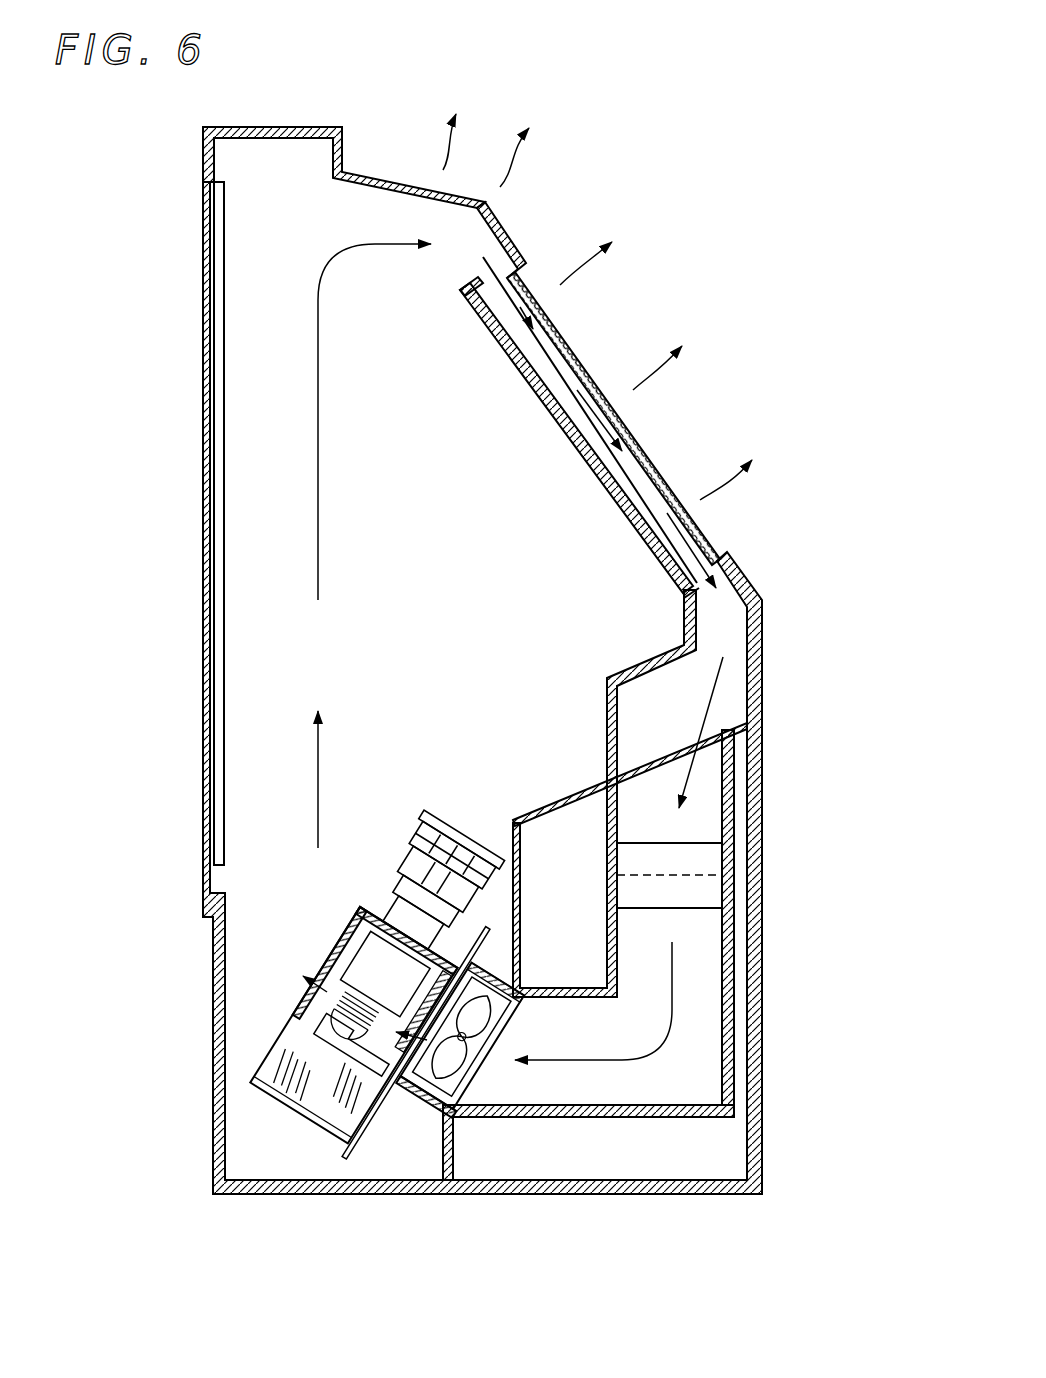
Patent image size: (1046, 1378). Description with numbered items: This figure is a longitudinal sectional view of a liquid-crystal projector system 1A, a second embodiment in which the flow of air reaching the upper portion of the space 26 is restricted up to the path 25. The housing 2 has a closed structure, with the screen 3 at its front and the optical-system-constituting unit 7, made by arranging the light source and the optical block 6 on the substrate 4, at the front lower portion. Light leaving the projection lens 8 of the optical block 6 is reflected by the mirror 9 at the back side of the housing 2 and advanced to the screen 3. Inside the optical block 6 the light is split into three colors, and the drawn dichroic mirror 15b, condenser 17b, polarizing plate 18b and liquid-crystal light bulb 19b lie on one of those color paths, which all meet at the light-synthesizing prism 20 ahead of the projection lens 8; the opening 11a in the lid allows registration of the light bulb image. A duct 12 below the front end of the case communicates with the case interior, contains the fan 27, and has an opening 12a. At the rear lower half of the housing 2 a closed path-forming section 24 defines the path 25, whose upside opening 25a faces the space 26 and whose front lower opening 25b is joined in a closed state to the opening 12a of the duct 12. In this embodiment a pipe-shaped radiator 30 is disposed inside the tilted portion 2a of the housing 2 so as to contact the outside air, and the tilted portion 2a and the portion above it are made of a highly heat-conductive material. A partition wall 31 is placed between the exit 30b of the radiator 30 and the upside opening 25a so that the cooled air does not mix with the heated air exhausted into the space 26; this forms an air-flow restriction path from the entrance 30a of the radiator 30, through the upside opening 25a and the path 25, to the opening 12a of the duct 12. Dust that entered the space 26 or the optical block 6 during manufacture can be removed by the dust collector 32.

The liquid-crystal projector system 1A is at (612, 350).
The housing 2 is at (295, 127).
The tilted portion 2a is at (498, 217).
The screen 3 is at (211, 422).
The substrate 4 is at (375, 1162).
The optical block 6 is at (372, 905).
The optical-system-constituting unit 7 is at (312, 912).
The projection lens 8 is at (415, 838).
The mirror 9 is at (560, 464).
The opening 11a is at (367, 950).
The duct 12 is at (432, 1125).
The opening 12a is at (478, 1070).
The dichroic mirror 15b is at (325, 1093).
The condenser 17b is at (330, 1040).
The polarizing plate 18b is at (320, 995).
The liquid-crystal light bulb 19b is at (322, 978).
The light-synthesizing prism 20 is at (345, 930).
The path-forming section 24 is at (560, 793).
The path 25 is at (735, 793).
The upside opening 25a is at (725, 722).
The opening 25b is at (472, 1097).
The space 26 is at (414, 492).
The fan 27 is at (485, 1005).
The pipe-shaped radiator 30 is at (683, 470).
The entrance 30a is at (480, 276).
The exit 30b is at (697, 555).
The partition wall 31 is at (605, 712).
The dust collector 32 is at (710, 910).